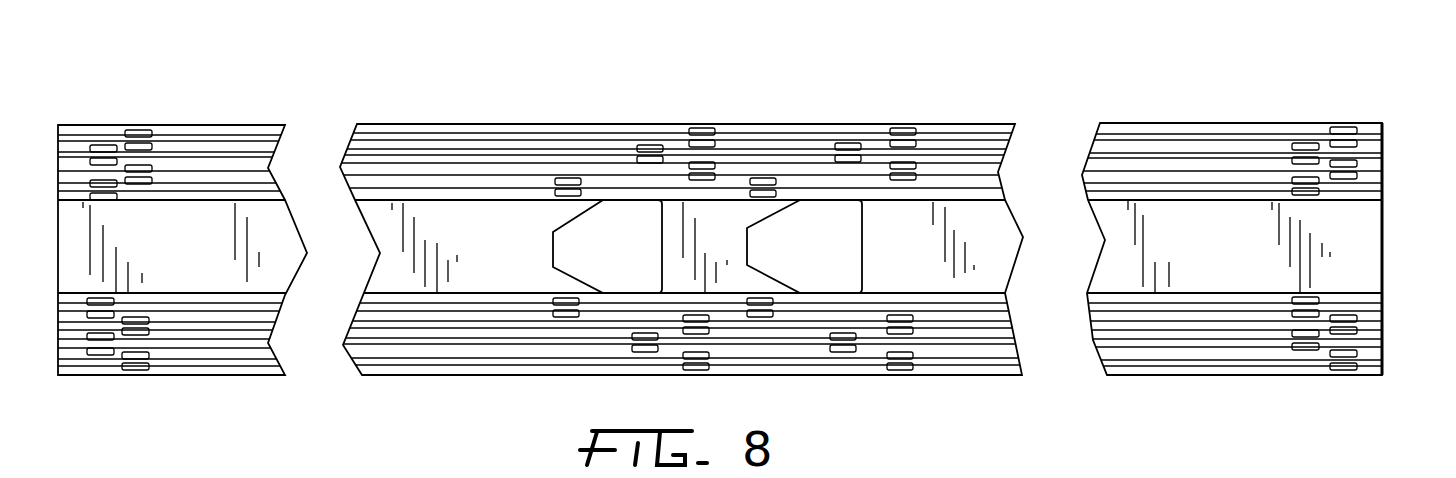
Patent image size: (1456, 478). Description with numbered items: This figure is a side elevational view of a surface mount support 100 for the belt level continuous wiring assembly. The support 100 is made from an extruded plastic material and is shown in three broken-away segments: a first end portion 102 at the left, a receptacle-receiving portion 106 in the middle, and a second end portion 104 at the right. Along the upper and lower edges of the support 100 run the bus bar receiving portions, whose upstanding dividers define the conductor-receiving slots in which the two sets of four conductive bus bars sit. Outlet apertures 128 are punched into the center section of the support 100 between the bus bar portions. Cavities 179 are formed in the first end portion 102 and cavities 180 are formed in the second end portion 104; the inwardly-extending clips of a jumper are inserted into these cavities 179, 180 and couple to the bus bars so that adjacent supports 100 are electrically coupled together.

The support 100 is at (895, 102).
The first end portion 102 is at (52, 158).
The second end portion 104 is at (1392, 154).
The receptacle-receiving portion 106 is at (691, 117).
The outlet apertures 128 is at (602, 254).
The cavities 179 is at (118, 132).
The cavities 180 is at (1323, 137).